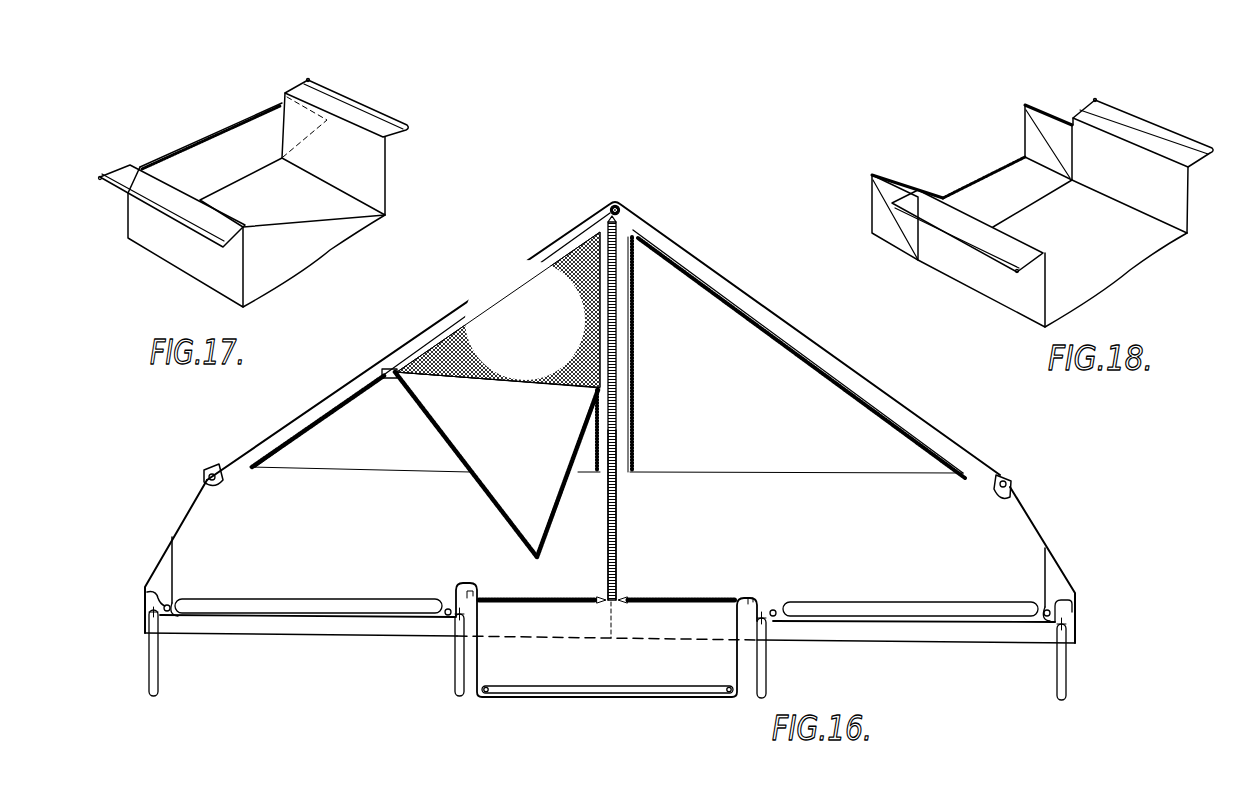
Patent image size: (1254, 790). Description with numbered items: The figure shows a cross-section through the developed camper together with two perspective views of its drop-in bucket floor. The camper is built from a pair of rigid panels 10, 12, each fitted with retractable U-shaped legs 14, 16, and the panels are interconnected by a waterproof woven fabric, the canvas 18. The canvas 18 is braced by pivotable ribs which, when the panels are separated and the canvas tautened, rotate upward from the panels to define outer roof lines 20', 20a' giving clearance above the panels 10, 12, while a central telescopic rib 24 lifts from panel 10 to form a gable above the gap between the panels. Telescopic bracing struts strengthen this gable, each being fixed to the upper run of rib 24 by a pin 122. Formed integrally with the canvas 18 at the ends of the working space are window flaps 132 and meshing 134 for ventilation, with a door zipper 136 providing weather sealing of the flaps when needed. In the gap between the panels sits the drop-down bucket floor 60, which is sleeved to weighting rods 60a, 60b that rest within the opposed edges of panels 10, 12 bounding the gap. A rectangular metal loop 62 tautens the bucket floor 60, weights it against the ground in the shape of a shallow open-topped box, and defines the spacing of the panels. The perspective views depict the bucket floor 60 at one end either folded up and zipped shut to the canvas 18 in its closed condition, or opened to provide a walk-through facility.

In FIG. 16, the rigid panel 10 is at (275, 620).
In FIG. 16, the rigid panel 12 is at (878, 623).
In FIG. 16, the retractable U-shaped legs 14 is at (158, 670).
In FIG. 16, the retractable U-shaped legs 16 is at (1058, 675).
In FIG. 16, the canvas 18 is at (170, 519).
In FIG. 16, the outer roof line 20' is at (185, 464).
In FIG. 16, the outer roof line 20a' is at (1037, 472).
In FIG. 16, the pivotable U-shaped rib 24 is at (615, 204).
In FIG. 16, the drop-down bucket floor 60 is at (571, 705).
In FIG. 17, the drop-down bucket floor 60 is at (171, 274).
In FIG. 18, the drop-down bucket floor 60 is at (1143, 274).
In FIG. 16, the weighting rod 60a is at (447, 620).
In FIG. 17, the weighting rod 60a is at (407, 126).
In FIG. 18, the weighting rod 60a is at (1095, 75).
In FIG. 16, the weighting rod 60b is at (773, 620).
In FIG. 17, the weighting rod 60b is at (100, 177).
In FIG. 18, the weighting rod 60b is at (872, 183).
In FIG. 16, the rectangular metal loop 62 is at (623, 694).
In FIG. 16, the pin 122 is at (637, 220).
In FIG. 16, the window flaps 132 is at (520, 503).
In FIG. 16, the meshing 134 is at (507, 313).
In FIG. 16, the door zipper 136 is at (616, 558).